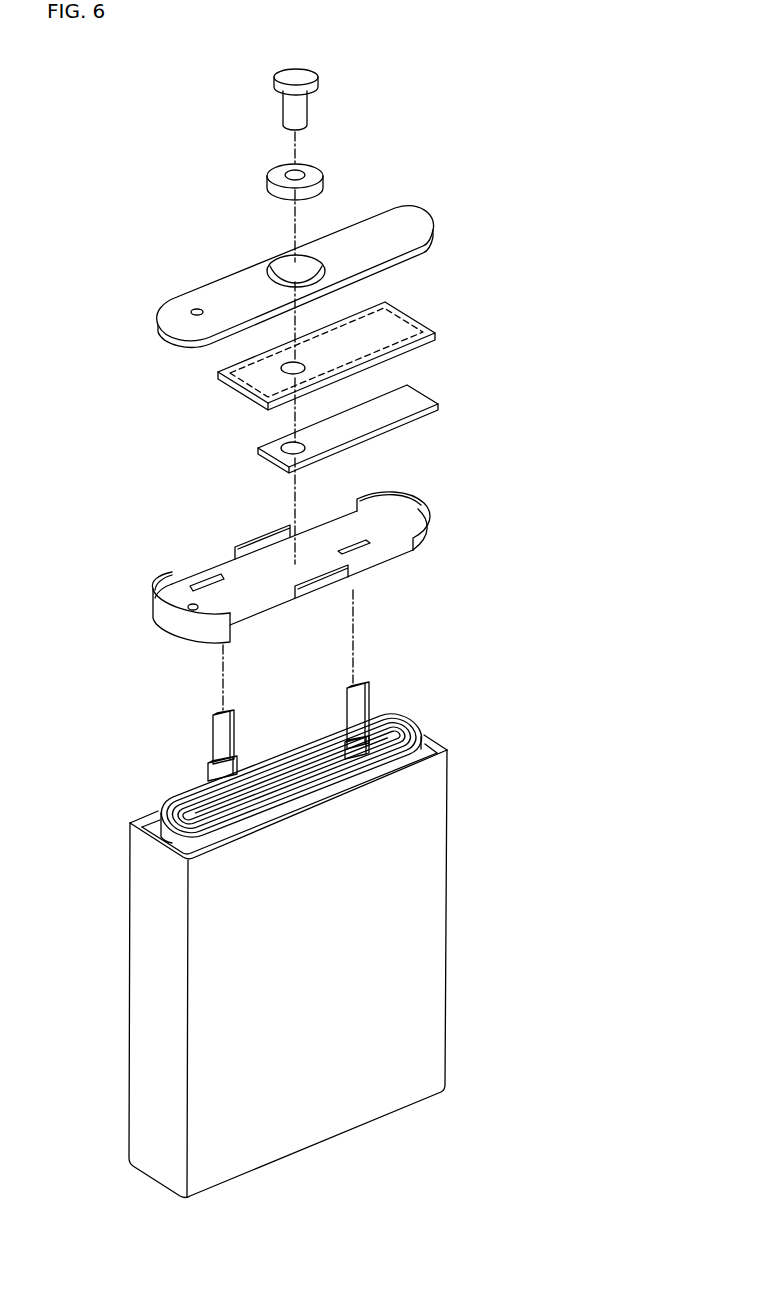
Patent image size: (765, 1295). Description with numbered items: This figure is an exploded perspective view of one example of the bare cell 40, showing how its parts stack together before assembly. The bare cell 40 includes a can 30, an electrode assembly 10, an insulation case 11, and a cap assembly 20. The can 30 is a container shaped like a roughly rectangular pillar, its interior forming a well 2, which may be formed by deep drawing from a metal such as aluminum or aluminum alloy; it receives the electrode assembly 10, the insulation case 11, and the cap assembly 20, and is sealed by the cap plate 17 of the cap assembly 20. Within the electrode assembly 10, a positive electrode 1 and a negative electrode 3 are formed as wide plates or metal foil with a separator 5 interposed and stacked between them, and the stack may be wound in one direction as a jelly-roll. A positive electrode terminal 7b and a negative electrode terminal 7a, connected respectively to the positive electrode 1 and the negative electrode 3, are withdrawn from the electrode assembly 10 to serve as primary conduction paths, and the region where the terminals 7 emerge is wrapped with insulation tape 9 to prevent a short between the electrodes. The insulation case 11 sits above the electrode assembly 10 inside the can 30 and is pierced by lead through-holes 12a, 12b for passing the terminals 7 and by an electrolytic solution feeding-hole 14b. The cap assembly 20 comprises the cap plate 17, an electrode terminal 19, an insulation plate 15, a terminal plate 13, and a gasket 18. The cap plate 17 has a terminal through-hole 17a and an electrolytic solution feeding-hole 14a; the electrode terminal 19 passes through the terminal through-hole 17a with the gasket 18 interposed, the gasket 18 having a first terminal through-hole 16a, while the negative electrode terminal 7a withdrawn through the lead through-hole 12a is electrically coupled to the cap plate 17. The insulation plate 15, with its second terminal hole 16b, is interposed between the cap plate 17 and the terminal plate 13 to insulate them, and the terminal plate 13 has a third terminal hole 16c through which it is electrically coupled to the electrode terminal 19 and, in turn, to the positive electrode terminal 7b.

The bare cell 40 is at (118, 65).
The positive electrode 1 is at (392, 718).
The well 2 is at (445, 752).
The negative electrode 3 is at (413, 727).
The separator 5 is at (398, 718).
The terminals 7 is at (291, 699).
The negative electrode terminal 7a is at (230, 742).
The positive electrode terminal 7b is at (350, 708).
The insulation tape 9 is at (208, 773).
The electrode assembly 10 is at (392, 645).
The insulation case 11 is at (157, 618).
The lead through-hole 12a is at (208, 575).
The lead through-hole 12b is at (350, 541).
The terminal plate 13 is at (408, 391).
The electrolytic solution feeding-hole 14a is at (193, 310).
The electrolytic solution feeding-hole 14b is at (190, 610).
The insulation plate 15 is at (413, 323).
The first terminal through-hole 16a is at (303, 175).
The second terminal hole 16b is at (250, 390).
The third terminal hole 16c is at (270, 458).
The cap plate 17 is at (407, 225).
The terminal through-hole 17a is at (317, 272).
The gasket 18 is at (306, 167).
The electrode terminal 19 is at (308, 76).
The cap assembly 20 is at (509, 82).
The can 30 is at (147, 982).